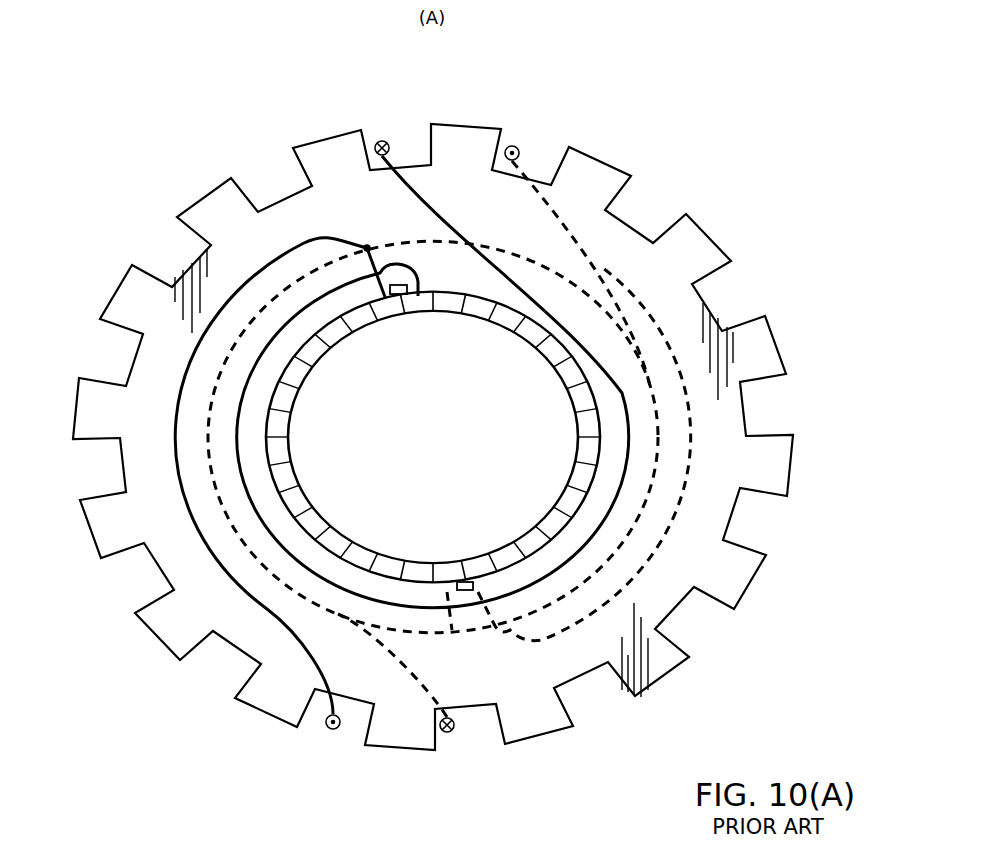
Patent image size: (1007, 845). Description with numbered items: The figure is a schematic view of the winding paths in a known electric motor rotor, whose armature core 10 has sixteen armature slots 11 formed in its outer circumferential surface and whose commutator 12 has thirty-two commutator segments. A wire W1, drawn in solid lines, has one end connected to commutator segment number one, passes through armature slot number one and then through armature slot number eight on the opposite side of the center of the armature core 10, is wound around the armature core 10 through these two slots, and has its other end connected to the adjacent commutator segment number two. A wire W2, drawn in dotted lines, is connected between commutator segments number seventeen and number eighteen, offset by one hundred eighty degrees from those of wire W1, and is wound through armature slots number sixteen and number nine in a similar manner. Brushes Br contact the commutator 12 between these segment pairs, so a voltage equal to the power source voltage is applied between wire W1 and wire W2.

The armature core 10 is at (657, 110).
The armature slots 11 is at (287, 180).
The commutator 12 is at (364, 498).
The wire W1 is at (427, 210).
The wire W2 is at (628, 285).
The brushes Br is at (397, 272).